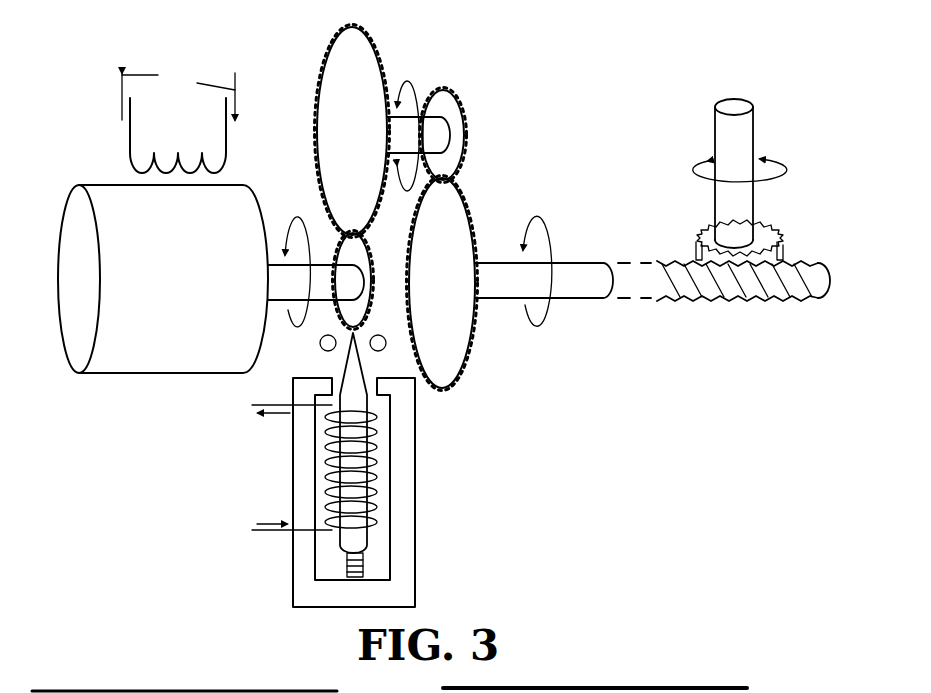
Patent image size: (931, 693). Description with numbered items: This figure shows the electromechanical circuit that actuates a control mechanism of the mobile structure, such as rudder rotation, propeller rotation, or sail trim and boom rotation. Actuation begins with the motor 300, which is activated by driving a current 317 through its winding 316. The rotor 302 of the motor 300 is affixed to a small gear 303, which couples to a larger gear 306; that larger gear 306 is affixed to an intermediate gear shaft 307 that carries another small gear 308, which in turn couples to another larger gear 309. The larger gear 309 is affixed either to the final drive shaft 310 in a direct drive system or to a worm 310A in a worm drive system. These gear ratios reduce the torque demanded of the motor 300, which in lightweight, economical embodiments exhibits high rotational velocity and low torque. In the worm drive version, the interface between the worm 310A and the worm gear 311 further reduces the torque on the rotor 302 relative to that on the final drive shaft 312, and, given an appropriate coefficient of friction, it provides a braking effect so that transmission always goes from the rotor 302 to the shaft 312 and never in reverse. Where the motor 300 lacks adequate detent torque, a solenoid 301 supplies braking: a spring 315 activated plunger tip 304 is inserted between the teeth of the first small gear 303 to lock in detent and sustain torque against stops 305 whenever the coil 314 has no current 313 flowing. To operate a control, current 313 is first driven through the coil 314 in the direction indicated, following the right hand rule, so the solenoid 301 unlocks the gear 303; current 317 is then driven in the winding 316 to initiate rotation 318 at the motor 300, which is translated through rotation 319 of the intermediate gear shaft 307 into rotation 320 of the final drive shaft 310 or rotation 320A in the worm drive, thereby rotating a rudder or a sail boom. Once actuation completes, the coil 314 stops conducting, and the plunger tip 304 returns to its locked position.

The motor 300 is at (87, 374).
The solenoid 301 is at (416, 480).
The rotor 302 is at (277, 302).
The small gear 303 is at (370, 296).
The plunger tip 304 is at (343, 363).
The stops 305 is at (320, 347).
The larger gear 306 is at (364, 30).
The intermediate gear shaft 307 is at (392, 115).
The small gear 308 is at (466, 142).
The larger gear 309 is at (468, 203).
The final drive shaft 310 is at (556, 300).
The worm 310A is at (672, 299).
The worm gear 311 is at (700, 236).
The final drive shaft 312 is at (713, 112).
The current 313 is at (265, 418).
The coil 314 is at (255, 536).
The spring 315 is at (350, 568).
The winding 316 is at (130, 150).
The current 317 is at (178, 96).
The rotation 318 is at (287, 240).
The rotation 319 is at (420, 92).
The rotation 320 is at (547, 228).
The rotation 320A is at (691, 172).